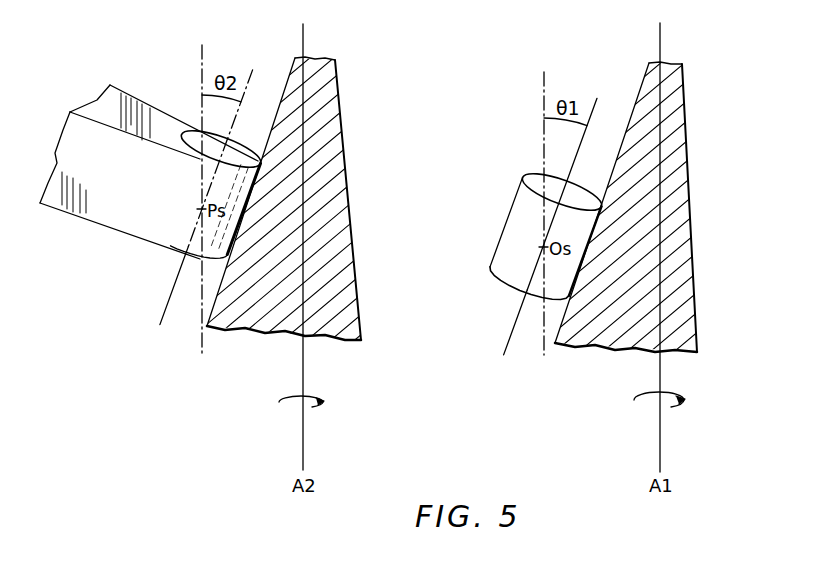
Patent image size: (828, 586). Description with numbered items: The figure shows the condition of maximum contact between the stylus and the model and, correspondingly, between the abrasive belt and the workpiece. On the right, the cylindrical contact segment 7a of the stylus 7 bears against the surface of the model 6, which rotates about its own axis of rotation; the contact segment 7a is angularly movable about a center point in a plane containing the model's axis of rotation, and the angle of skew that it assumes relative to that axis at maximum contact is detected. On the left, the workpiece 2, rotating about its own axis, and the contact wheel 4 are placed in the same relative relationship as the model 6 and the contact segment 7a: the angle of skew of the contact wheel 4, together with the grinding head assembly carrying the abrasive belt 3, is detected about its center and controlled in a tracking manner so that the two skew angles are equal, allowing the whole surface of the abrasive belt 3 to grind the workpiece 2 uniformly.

The workpiece 2 is at (343, 226).
The abrasive belt 3 is at (125, 212).
The contact wheel 4 is at (233, 152).
The model 6 is at (687, 222).
The stylus 7 is at (533, 236).
The cylindrical contact segment 7a is at (505, 269).